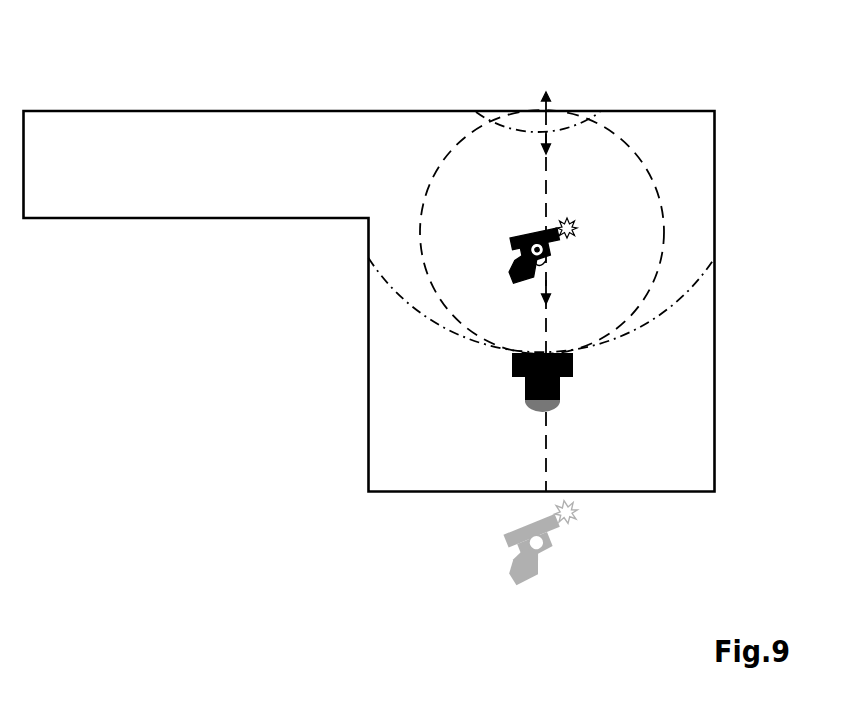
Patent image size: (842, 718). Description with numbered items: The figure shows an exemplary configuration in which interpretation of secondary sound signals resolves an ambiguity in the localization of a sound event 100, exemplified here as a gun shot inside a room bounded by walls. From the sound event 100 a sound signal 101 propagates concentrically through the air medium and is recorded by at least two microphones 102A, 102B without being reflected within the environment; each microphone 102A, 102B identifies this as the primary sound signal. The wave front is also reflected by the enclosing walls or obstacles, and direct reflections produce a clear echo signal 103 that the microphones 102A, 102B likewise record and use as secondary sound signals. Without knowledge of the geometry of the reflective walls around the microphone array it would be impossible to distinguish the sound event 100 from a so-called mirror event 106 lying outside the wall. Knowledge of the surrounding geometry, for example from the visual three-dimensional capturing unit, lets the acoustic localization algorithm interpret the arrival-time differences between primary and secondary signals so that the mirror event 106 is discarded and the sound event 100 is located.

The sound event 100 is at (564, 220).
The sound signal 101 is at (435, 172).
The microphone 102A is at (512, 368).
The microphone 102B is at (573, 368).
The echo signal 103 is at (512, 131).
The mirror event 106 is at (564, 514).